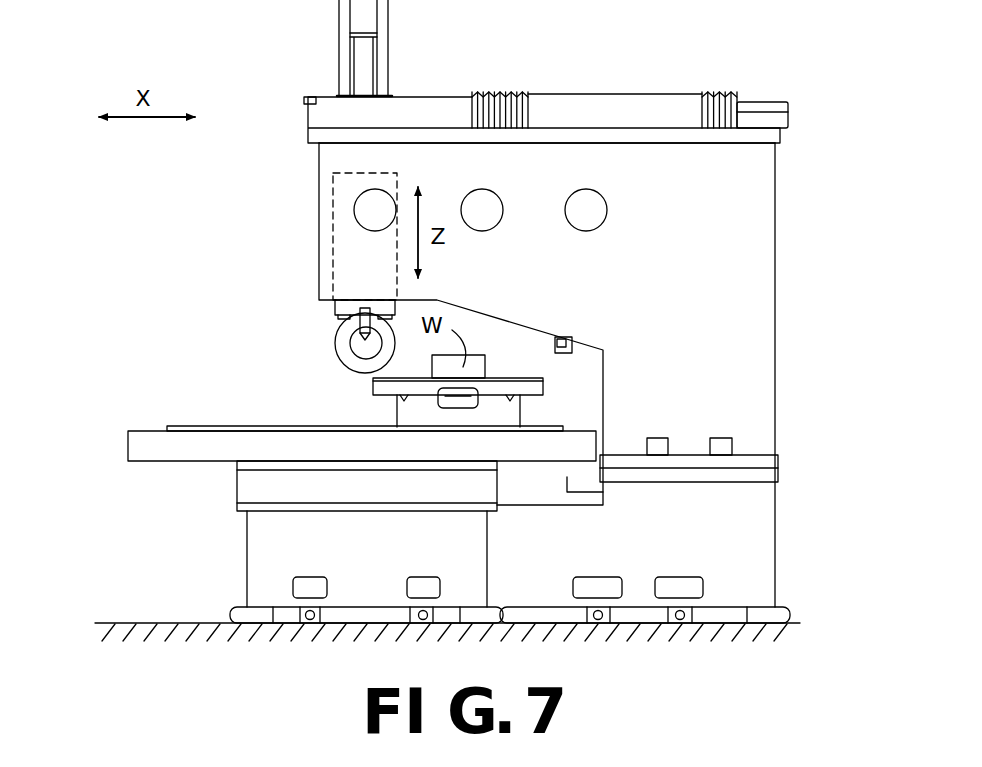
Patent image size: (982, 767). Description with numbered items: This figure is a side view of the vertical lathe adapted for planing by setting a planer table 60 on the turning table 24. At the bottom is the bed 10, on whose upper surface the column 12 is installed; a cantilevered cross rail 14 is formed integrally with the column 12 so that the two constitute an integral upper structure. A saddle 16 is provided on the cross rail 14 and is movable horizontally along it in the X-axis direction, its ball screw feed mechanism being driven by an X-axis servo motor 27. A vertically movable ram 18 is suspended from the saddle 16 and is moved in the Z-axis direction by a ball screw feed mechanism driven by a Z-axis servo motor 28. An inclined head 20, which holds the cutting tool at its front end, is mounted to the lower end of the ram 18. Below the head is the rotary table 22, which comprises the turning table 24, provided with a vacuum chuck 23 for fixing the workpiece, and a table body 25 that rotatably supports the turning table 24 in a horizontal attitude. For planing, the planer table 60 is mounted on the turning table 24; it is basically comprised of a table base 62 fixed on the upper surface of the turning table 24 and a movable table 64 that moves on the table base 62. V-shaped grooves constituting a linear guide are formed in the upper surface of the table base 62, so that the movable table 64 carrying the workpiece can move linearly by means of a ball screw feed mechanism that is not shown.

The bed 10 is at (753, 538).
The column 12 is at (737, 318).
The cantilevered cross rail 14 is at (436, 190).
The saddle 16 is at (328, 108).
The ram 18 is at (337, 220).
The inclined head 20 is at (272, 314).
The rotary table 22 is at (146, 409).
The vacuum chuck 23 is at (218, 426).
The turning table 24 is at (143, 447).
The table body 25 is at (260, 547).
The X-axis servo motor 27 is at (762, 113).
The Z-axis servo motor 28 is at (365, 57).
The planer table 60 is at (331, 382).
The table base 62 is at (498, 412).
The movable table 64 is at (507, 387).